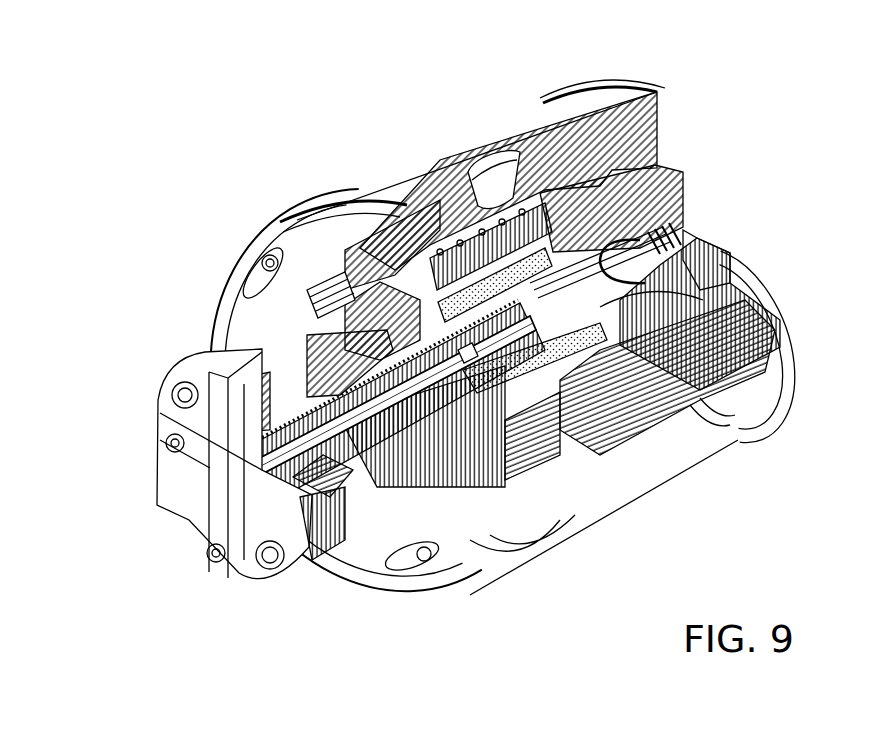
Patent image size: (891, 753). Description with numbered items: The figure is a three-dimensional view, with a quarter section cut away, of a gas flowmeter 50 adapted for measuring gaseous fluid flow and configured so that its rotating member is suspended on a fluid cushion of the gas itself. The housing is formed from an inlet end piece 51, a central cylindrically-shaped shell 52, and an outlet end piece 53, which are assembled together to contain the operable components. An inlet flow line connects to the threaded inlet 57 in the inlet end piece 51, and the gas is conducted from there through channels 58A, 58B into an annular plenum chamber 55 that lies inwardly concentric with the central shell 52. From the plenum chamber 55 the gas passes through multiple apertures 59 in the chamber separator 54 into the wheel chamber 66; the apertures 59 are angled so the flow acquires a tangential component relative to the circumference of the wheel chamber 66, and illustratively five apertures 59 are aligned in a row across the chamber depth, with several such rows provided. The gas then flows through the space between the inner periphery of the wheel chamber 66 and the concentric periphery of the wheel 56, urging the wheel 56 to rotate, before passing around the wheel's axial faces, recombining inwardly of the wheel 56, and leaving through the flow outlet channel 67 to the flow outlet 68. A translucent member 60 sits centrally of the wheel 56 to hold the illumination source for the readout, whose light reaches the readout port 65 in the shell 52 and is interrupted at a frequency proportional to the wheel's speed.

The gas flowmeter 50 is at (212, 298).
The inlet end piece 51 is at (398, 588).
The central cylindrically-shaped shell 52 is at (640, 440).
The outlet end piece 53 is at (785, 362).
The chamber separator 54 is at (560, 410).
The annular plenum chamber 55 is at (537, 210).
The wheel 56 is at (712, 300).
The threaded inlet 57 is at (320, 265).
The channel 58A is at (495, 520).
The channel 58B is at (375, 235).
The apertures 59 is at (460, 250).
The translucent member 60 is at (200, 517).
The readout port 65 is at (485, 165).
The wheel chamber 66 is at (650, 175).
The flow outlet channel 67 is at (660, 238).
The flow outlet 68 is at (690, 238).